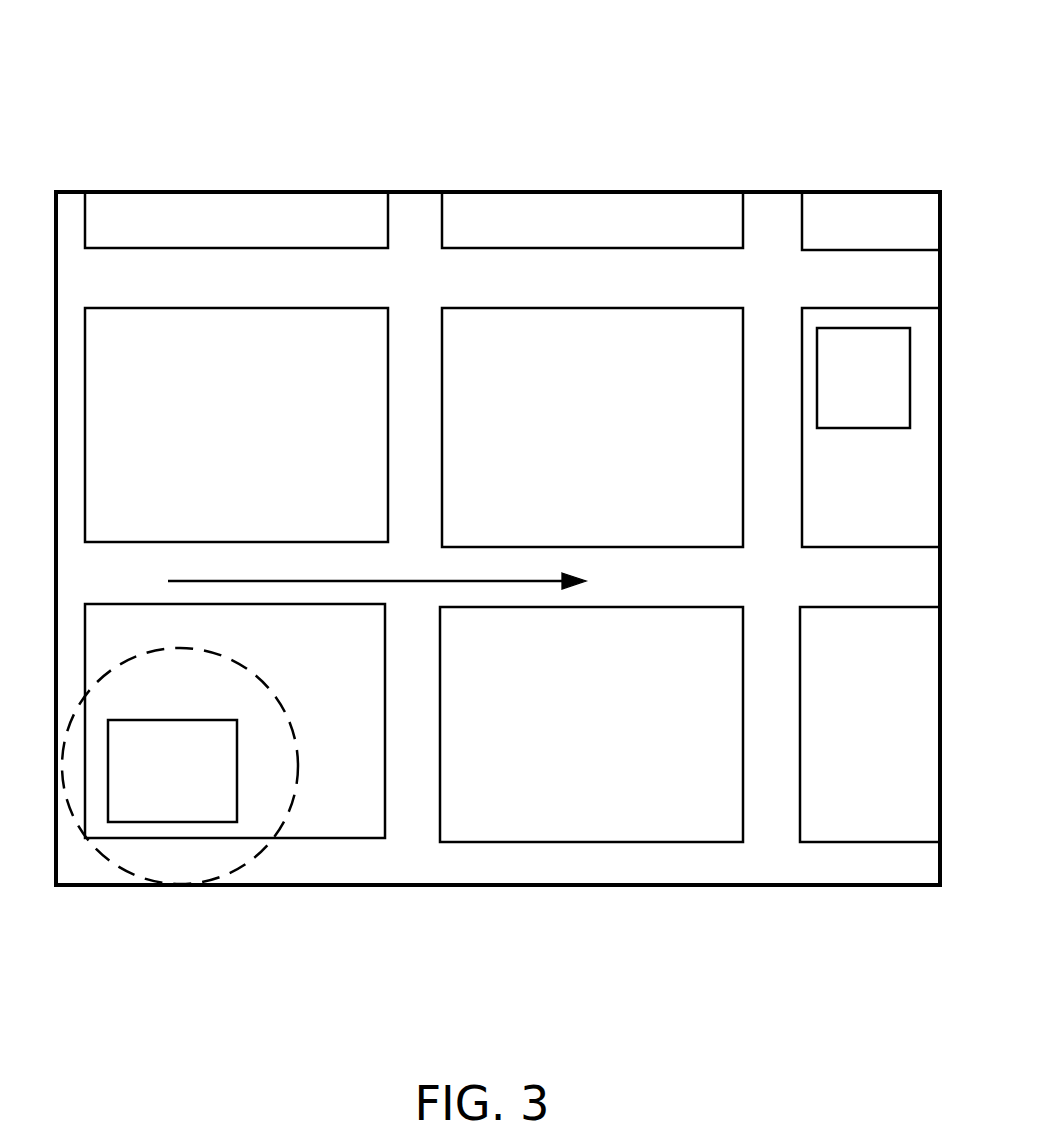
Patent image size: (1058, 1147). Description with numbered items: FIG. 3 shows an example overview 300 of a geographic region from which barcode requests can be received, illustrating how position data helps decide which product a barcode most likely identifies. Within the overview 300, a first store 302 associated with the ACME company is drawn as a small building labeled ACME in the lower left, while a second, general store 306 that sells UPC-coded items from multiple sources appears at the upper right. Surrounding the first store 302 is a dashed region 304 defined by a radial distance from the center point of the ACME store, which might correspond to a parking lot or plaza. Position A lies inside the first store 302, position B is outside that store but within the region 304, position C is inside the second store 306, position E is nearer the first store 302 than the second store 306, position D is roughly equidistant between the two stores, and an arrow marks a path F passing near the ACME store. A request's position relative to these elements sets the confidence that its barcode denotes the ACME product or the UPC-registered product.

The overview 300 is at (870, 104).
The first store 302 is at (237, 736).
The region 304 is at (238, 868).
The second store 306 is at (834, 428).